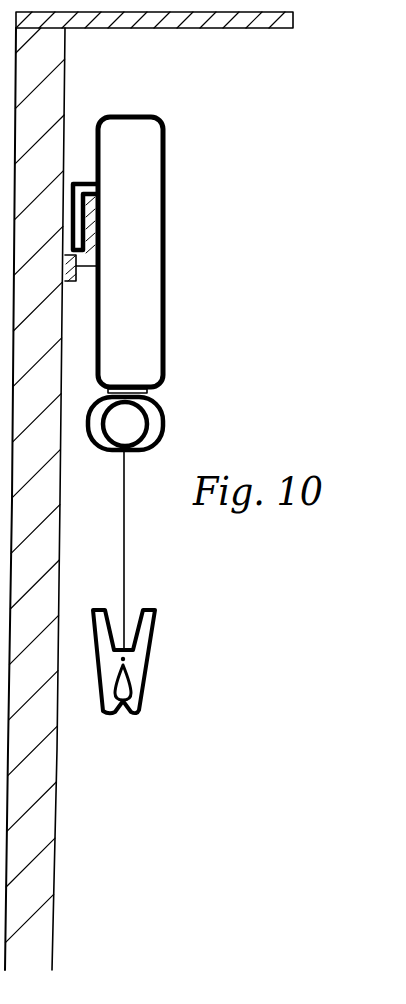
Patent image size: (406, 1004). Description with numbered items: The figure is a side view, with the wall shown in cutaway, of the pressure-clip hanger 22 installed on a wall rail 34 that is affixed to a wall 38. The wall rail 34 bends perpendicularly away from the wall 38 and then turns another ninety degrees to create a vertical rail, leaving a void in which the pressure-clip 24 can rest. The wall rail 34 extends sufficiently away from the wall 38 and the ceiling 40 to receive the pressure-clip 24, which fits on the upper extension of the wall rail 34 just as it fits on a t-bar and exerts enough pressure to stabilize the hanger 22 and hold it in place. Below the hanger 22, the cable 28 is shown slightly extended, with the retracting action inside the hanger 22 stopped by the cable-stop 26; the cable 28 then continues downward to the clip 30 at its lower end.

The ceiling 40 is at (149, 29).
The wall 38 is at (66, 70).
The pressure-clip 24 is at (79, 180).
The wall rail 34 is at (69, 293).
The hanger 22 is at (165, 305).
The cable-stop 26 is at (166, 425).
The cable 28 is at (126, 560).
The clip 30 is at (152, 665).